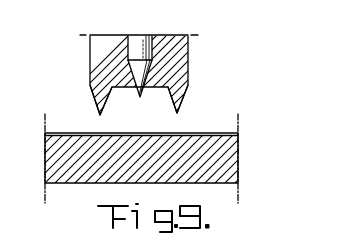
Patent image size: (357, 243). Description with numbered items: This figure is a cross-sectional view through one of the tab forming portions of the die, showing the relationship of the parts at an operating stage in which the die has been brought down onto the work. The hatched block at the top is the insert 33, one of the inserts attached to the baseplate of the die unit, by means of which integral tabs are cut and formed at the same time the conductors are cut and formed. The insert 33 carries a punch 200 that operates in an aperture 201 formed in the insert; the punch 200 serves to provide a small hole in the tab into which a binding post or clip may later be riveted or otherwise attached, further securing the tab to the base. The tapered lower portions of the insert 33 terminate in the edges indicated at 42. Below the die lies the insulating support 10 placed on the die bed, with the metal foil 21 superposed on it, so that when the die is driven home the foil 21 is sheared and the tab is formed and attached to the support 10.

The insulating support 10 is at (225, 165).
The metal foil 21 is at (201, 130).
The insert 33 is at (184, 49).
The cutting edges 42 is at (170, 114).
The punch 200 is at (138, 70).
The aperture 201 is at (126, 78).